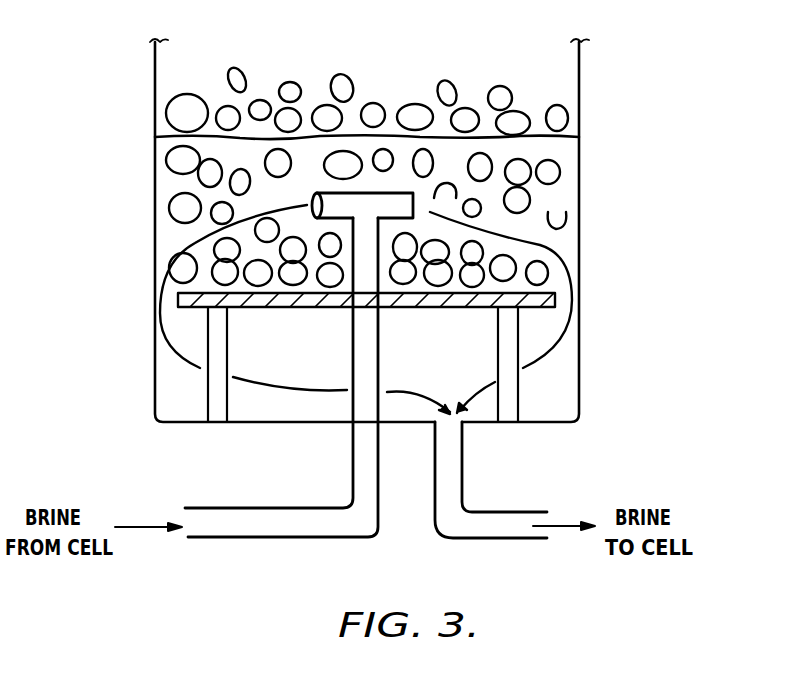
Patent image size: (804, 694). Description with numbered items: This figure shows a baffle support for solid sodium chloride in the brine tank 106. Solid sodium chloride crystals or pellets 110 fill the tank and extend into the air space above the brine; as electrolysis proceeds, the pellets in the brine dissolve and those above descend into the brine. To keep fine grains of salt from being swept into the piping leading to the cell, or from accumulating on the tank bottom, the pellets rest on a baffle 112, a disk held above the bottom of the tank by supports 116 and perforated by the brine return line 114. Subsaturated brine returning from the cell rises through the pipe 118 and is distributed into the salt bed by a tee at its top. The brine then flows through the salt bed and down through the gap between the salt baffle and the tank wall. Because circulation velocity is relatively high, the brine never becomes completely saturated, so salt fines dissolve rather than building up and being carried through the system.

The brine tank 106 is at (153, 205).
The solid sodium chloride crystals or pellets 110 is at (470, 207).
The baffle 112 is at (180, 299).
The brine return line 114 is at (327, 530).
The supports 116 is at (217, 412).
The pipe 118 is at (368, 205).